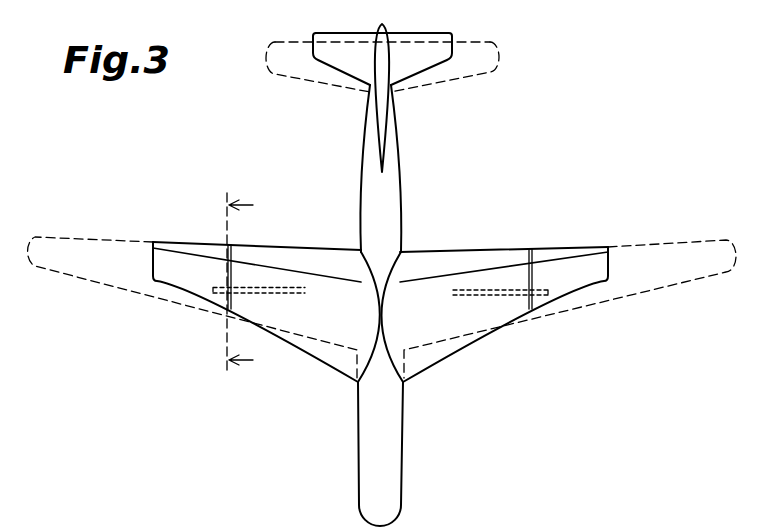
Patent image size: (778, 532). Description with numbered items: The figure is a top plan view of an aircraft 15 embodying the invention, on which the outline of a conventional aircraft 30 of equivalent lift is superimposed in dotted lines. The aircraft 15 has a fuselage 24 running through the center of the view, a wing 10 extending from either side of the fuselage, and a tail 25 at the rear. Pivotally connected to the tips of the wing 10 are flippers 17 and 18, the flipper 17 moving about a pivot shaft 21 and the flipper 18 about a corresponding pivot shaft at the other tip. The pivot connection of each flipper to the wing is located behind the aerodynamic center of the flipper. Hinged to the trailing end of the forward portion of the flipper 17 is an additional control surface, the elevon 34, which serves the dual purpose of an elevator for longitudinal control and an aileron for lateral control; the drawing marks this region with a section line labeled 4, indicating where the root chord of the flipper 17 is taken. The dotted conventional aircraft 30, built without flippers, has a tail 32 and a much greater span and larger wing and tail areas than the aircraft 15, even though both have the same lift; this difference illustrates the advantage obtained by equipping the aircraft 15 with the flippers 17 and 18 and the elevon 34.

The wing 10 is at (497, 313).
The aircraft 15 is at (494, 243).
The flipper 17 is at (193, 283).
The flipper 18 is at (568, 285).
The pivot shaft 21 is at (216, 289).
The fuselage 24 is at (392, 430).
The tail 25 is at (448, 33).
The aircraft 30 is at (678, 238).
The tail 32 is at (494, 50).
The elevon 34 is at (188, 242).
The section line 4- 4 is at (246, 283).